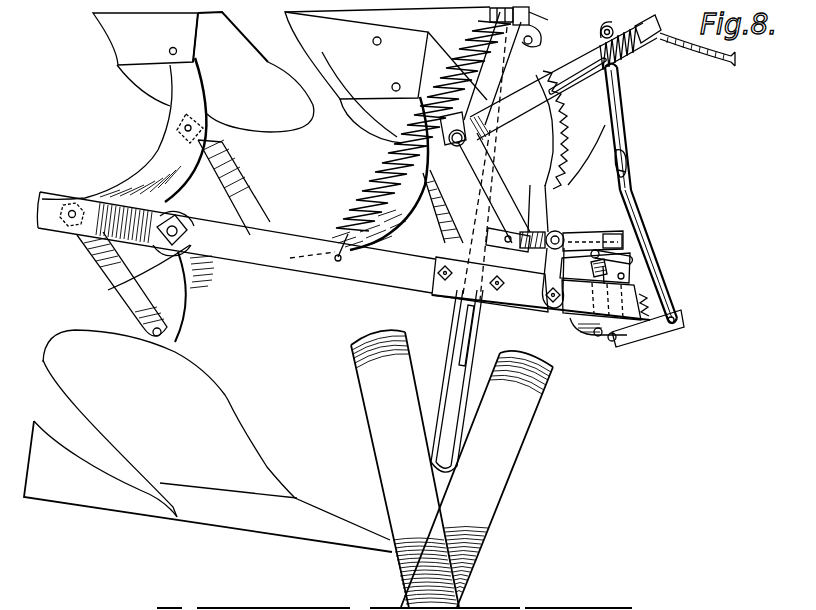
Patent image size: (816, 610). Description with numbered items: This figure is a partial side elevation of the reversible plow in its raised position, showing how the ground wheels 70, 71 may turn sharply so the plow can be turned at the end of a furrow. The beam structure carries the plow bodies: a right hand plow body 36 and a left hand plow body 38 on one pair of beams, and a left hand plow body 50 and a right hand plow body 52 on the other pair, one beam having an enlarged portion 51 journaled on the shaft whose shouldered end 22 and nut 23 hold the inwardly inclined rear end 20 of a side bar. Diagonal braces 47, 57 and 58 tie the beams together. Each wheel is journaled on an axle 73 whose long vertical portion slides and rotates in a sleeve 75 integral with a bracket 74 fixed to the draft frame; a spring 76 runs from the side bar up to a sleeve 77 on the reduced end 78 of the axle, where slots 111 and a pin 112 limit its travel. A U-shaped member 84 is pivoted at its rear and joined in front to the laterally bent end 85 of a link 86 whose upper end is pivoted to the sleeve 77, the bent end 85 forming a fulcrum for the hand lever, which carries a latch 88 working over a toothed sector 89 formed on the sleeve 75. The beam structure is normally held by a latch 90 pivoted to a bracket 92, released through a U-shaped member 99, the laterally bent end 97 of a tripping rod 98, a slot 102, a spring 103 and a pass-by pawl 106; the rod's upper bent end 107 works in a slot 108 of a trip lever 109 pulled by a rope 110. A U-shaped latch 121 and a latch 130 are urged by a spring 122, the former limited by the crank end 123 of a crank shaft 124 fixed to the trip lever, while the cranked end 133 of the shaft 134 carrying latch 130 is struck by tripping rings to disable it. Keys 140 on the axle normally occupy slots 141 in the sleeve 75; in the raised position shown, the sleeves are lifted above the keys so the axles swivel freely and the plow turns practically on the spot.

The inwardly inclined rear end 20 is at (395, 272).
The shoulder 22 is at (193, 234).
The nut 23 is at (128, 200).
The right hand plow body 36 is at (107, 503).
The left hand plow body 38 is at (203, 72).
The diagonal brace 47 is at (245, 195).
The left hand plow body 50 is at (387, 75).
The enlarged portion 51 is at (128, 283).
The right hand plow body 52 is at (294, 527).
The diagonal brace 57 is at (104, 260).
The brace 58 is at (400, 198).
The ground wheel 70 is at (522, 428).
The ground wheel 71 is at (366, 408).
The axle 73 is at (460, 368).
The bracket 74 is at (522, 303).
The sleeve 75 is at (389, 173).
The spring 76 is at (385, 178).
The sleeve 77 is at (532, 34).
The reduced end 78 is at (520, 14).
The U-shaped member 84 is at (480, 166).
The laterally bent end 85 is at (541, 284).
The link 86 is at (534, 216).
The latch 88 is at (578, 72).
The toothed sector 89 is at (563, 122).
The latch 90 is at (593, 340).
The bracket 92 is at (640, 265).
The laterally bent end 97 is at (678, 330).
The tripping rod 98 is at (640, 200).
The U-shaped member 99 is at (680, 318).
The slot 102 is at (600, 343).
The spring 103 is at (652, 298).
The pass-by pawl 106 is at (598, 263).
The laterally bent end 107 is at (628, 170).
The slot 108 is at (623, 153).
The trip lever 109 is at (623, 98).
The rope 110 is at (690, 55).
The slot 111 is at (615, 25).
The pin 112 is at (550, 18).
The U-shaped latch 121 is at (628, 236).
The spring 122 is at (593, 222).
The crank end 123 is at (582, 240).
The crank shaft 124 is at (640, 258).
The latch 130 is at (586, 165).
The cranked end 133 is at (584, 341).
The shaft 134 is at (544, 228).
The key 140 is at (462, 328).
The slot 141 is at (474, 379).